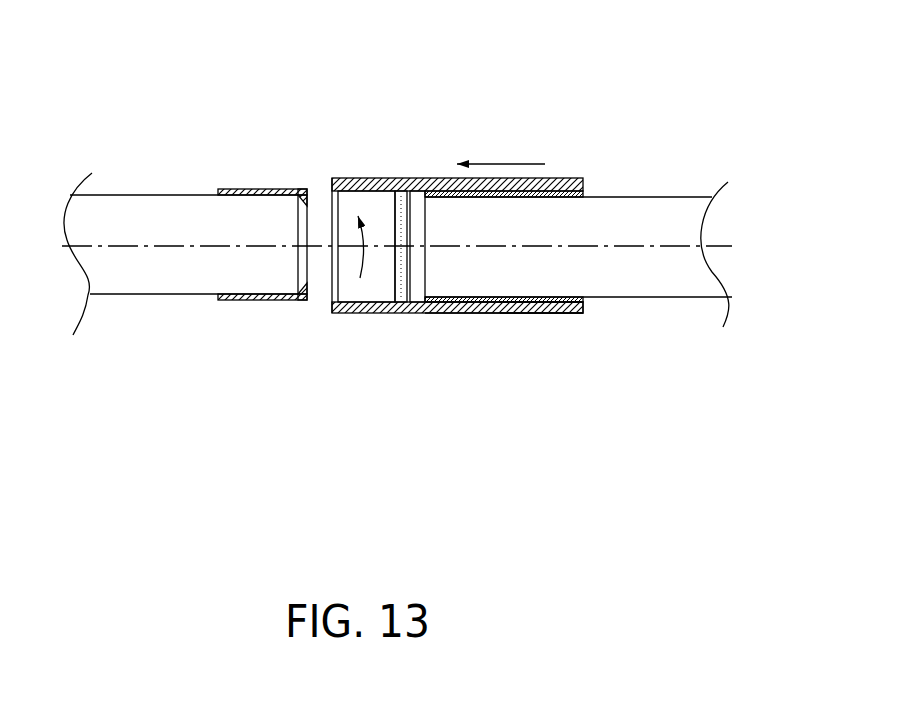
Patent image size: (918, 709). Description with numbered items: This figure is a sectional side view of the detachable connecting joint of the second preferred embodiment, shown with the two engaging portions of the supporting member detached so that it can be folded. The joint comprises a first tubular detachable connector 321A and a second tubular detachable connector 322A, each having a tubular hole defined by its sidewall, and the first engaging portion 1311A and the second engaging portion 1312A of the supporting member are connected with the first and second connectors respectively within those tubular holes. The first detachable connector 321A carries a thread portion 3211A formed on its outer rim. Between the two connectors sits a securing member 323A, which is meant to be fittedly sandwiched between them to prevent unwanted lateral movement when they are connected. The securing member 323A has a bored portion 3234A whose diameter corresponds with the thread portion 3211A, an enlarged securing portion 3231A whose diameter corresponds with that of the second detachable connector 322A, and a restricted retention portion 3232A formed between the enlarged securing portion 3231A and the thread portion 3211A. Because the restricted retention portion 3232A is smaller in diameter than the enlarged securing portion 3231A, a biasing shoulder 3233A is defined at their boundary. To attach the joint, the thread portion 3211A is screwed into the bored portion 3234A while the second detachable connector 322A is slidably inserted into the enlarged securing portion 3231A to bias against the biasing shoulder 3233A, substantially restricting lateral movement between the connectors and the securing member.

The second engaging portion 1312A is at (146, 207).
The first engaging portion 1311A is at (663, 283).
The second tubular detachable connector 322A is at (252, 298).
The enlarged securing portion 3231A is at (353, 176).
The securing member 323A is at (395, 180).
The restricted retention portion 3232A is at (404, 197).
The biasing shoulder 3233A is at (385, 294).
The first tubular detachable connector 321A is at (458, 301).
The thread portion 3211A is at (425, 313).
The bored portion 3234A is at (505, 314).